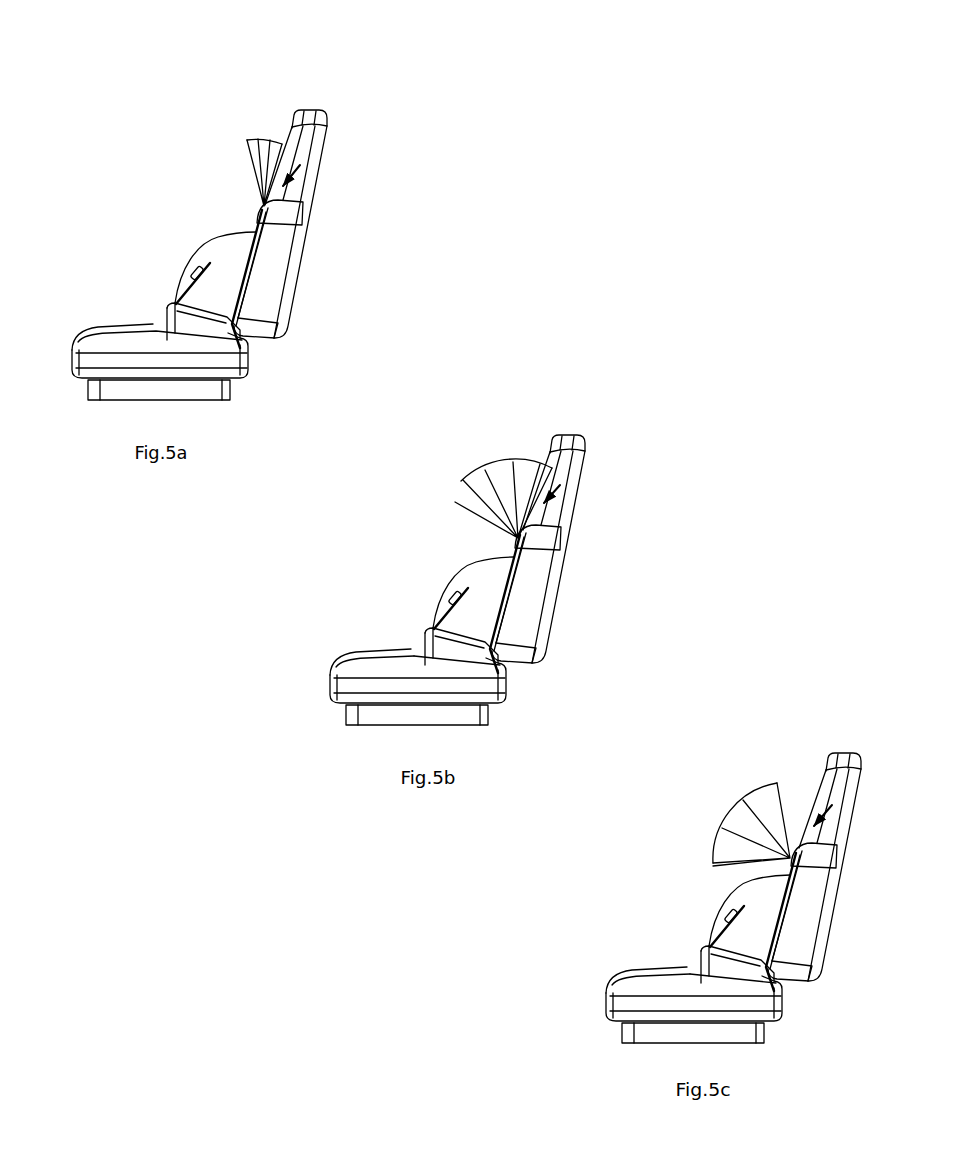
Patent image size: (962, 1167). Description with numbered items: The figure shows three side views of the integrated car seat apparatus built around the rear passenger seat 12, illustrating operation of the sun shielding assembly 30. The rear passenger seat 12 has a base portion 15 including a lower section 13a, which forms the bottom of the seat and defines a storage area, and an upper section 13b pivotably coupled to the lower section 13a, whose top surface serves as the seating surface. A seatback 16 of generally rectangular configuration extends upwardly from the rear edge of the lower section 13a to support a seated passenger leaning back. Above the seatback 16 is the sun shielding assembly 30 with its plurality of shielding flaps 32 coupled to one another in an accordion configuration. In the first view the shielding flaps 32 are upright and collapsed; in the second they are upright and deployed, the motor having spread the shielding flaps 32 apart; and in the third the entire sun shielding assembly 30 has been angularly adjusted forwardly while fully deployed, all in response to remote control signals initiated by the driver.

In FIG. 5A, the rear passenger seat 12 is at (217, 261).
In FIG. 5B, the rear passenger seat 12 is at (441, 589).
In FIG. 5C, the rear passenger seat 12 is at (705, 929).
In FIG. 5A, the lower section 13a is at (164, 305).
In FIG. 5B, the lower section 13a is at (422, 630).
In FIG. 5C, the lower section 13a is at (698, 948).
In FIG. 5B, the upper section 13b is at (372, 662).
In FIG. 5C, the upper section 13b is at (648, 980).
In FIG. 5A, the base portion 15 is at (164, 316).
In FIG. 5B, the base portion 15 is at (422, 641).
In FIG. 5C, the base portion 15 is at (698, 959).
In FIG. 5A, the seatback 16 is at (280, 224).
In FIG. 5B, the seatback 16 is at (538, 549).
In FIG. 5C, the seatback 16 is at (814, 867).
In FIG. 5A, the sun shielding assembly 30 is at (236, 188).
In FIG. 5B, the sun shielding assembly 30 is at (478, 517).
In FIG. 5C, the sun shielding assembly 30 is at (722, 858).
In FIG. 5A, the shielding flaps 32 is at (252, 160).
In FIG. 5B, the shielding flaps 32 is at (482, 502).
In FIG. 5C, the shielding flaps 32 is at (767, 803).